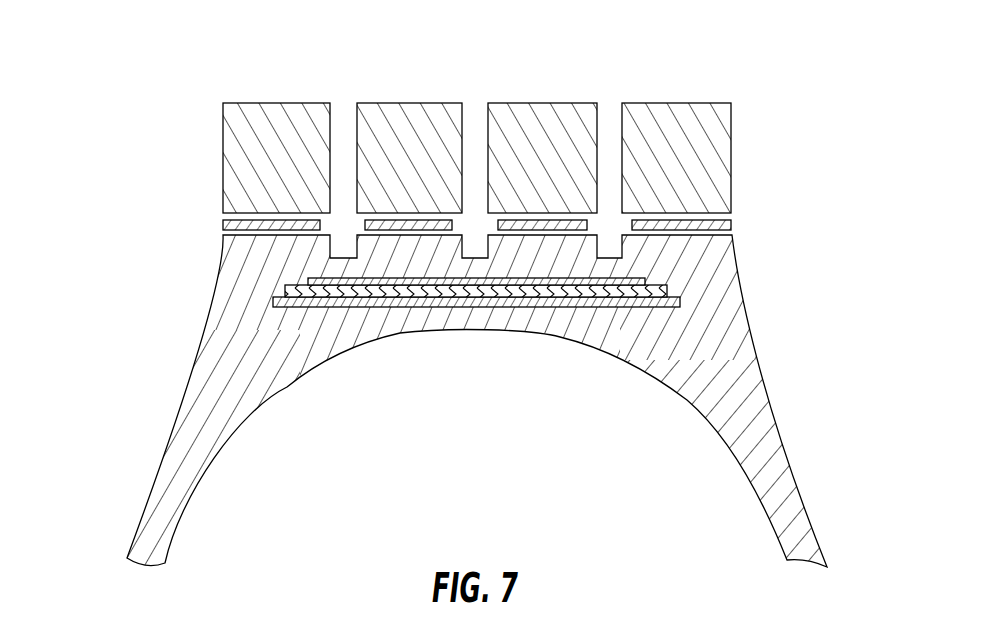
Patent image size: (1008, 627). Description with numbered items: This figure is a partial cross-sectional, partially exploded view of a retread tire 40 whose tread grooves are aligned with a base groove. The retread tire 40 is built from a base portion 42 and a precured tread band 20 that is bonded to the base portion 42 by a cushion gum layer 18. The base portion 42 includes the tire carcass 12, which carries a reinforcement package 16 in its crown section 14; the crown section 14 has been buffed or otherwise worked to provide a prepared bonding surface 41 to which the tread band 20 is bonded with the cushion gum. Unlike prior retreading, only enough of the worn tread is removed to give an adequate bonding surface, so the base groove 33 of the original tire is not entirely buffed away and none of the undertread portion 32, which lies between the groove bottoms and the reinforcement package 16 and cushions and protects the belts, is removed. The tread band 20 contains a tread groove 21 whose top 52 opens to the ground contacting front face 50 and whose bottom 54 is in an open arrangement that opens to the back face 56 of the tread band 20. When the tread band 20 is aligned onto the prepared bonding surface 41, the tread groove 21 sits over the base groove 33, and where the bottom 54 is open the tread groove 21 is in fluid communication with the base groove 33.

The tire carcass 12 is at (192, 387).
The crown section 14 is at (262, 281).
The reinforcement package 16 is at (465, 307).
The cushion gum layer 18 is at (223, 227).
The tread band 20 is at (223, 143).
The tread groove 21 is at (343, 133).
The undertread portion 32 is at (215, 280).
The base groove 33 is at (623, 247).
The retread tire 40 is at (790, 432).
The prepared bonding surface 41 is at (733, 237).
The base portion 42 is at (142, 512).
The front face 50 is at (673, 103).
The top 52 is at (606, 108).
The bottom 54 is at (607, 217).
The back face 56 is at (732, 219).